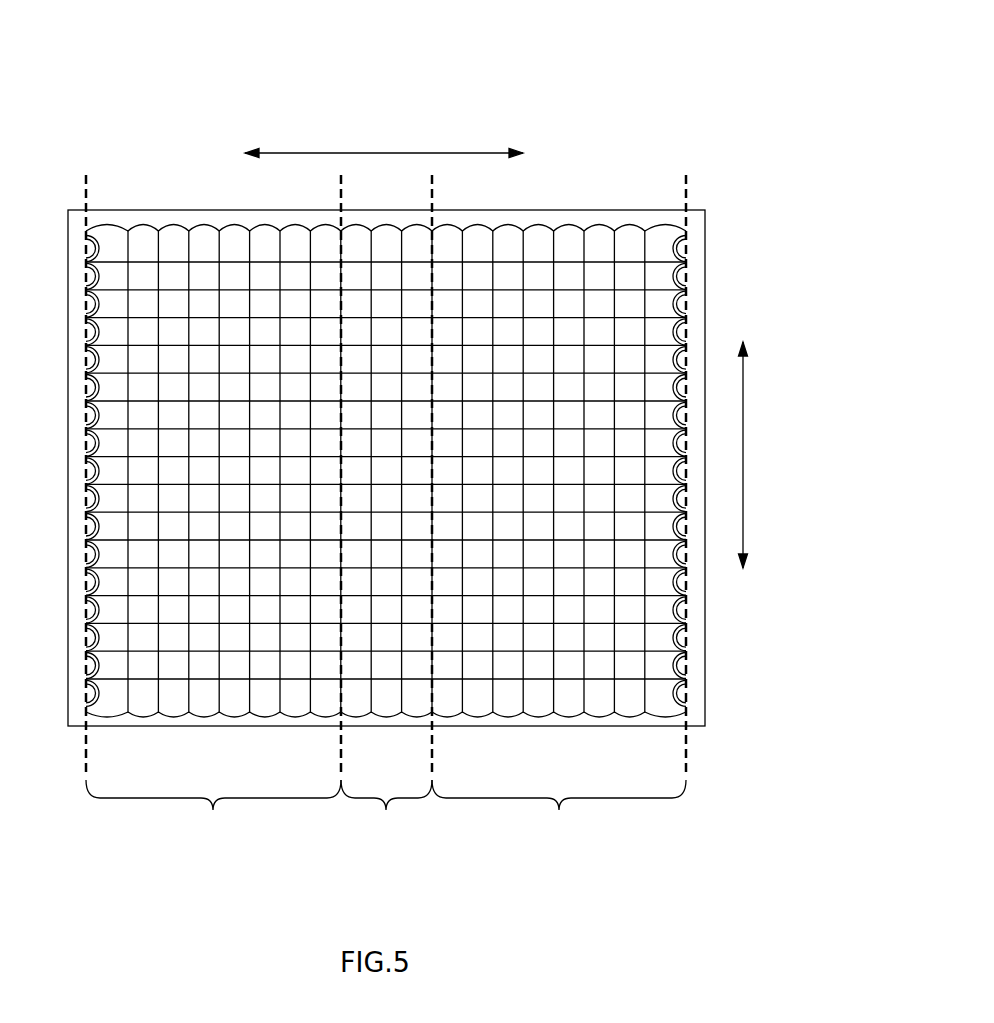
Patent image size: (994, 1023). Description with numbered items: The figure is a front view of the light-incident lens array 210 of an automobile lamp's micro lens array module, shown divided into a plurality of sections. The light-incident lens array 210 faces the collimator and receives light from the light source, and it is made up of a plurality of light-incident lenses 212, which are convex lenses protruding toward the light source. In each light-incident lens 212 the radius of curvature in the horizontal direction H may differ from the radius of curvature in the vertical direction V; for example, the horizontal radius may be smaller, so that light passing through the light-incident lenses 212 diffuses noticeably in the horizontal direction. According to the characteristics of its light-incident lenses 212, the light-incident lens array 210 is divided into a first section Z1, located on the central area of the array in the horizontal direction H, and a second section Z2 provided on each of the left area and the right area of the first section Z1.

The light-incident lens array 210 is at (386, 395).
The light-incident lens 212 is at (599, 278).
The horizontal direction H is at (384, 153).
The vertical direction V is at (745, 455).
The first section Z1 is at (386, 811).
The second section Z2 is at (386, 811).